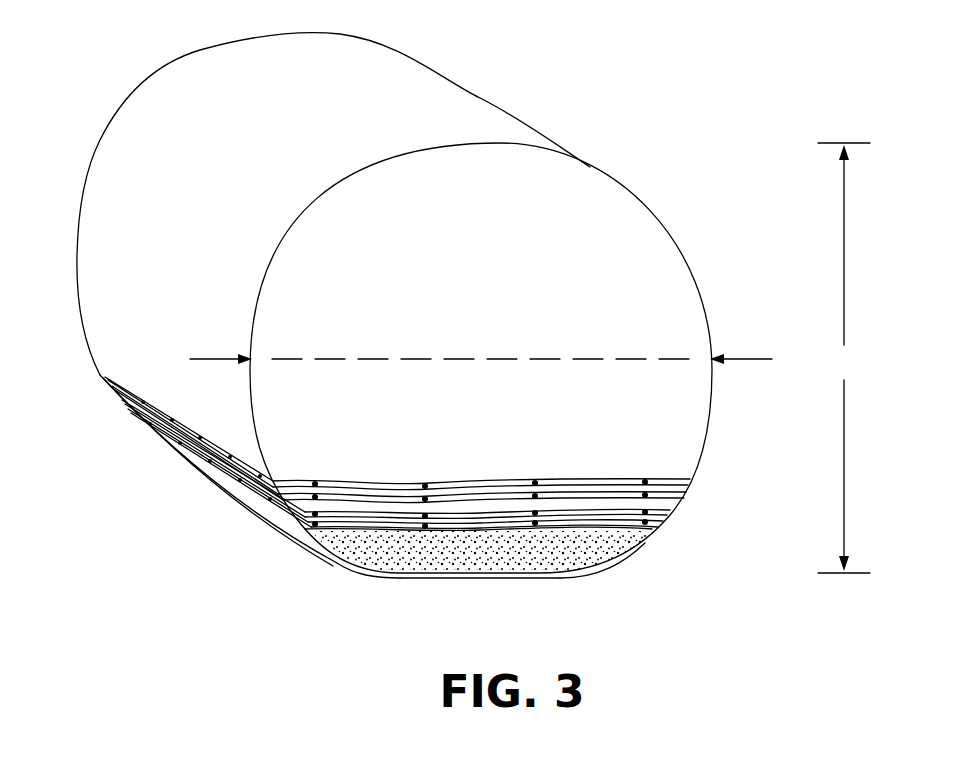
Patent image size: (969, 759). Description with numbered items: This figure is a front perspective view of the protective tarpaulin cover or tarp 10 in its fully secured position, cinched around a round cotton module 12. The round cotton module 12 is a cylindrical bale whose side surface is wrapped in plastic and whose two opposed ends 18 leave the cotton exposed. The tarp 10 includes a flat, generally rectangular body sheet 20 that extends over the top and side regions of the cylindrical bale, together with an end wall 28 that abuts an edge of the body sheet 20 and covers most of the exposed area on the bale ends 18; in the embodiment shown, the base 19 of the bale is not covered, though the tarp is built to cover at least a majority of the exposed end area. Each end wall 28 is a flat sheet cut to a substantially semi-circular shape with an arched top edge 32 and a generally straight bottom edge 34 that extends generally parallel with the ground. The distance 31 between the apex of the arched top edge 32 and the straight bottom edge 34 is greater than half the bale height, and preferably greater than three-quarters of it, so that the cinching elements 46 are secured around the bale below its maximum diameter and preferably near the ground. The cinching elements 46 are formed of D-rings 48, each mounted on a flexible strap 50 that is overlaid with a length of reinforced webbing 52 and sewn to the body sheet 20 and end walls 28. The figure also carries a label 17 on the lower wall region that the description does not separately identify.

The protective tarpaulin cover 10 is at (670, 183).
The round cotton module 12 is at (333, 562).
The lower sidewall 17 is at (633, 547).
The opposed ends 18 is at (407, 558).
The base 19 is at (536, 588).
The body sheet 20 is at (420, 78).
The end wall 28 is at (548, 284).
The distance 31 is at (844, 358).
The arched top edge 32 is at (483, 143).
The straight bottom edge 34 is at (590, 525).
The cinching elements 46 is at (650, 540).
The D-ring 48 is at (313, 530).
The flexible strap 50 is at (437, 510).
The reinforced webbing 52 is at (670, 487).